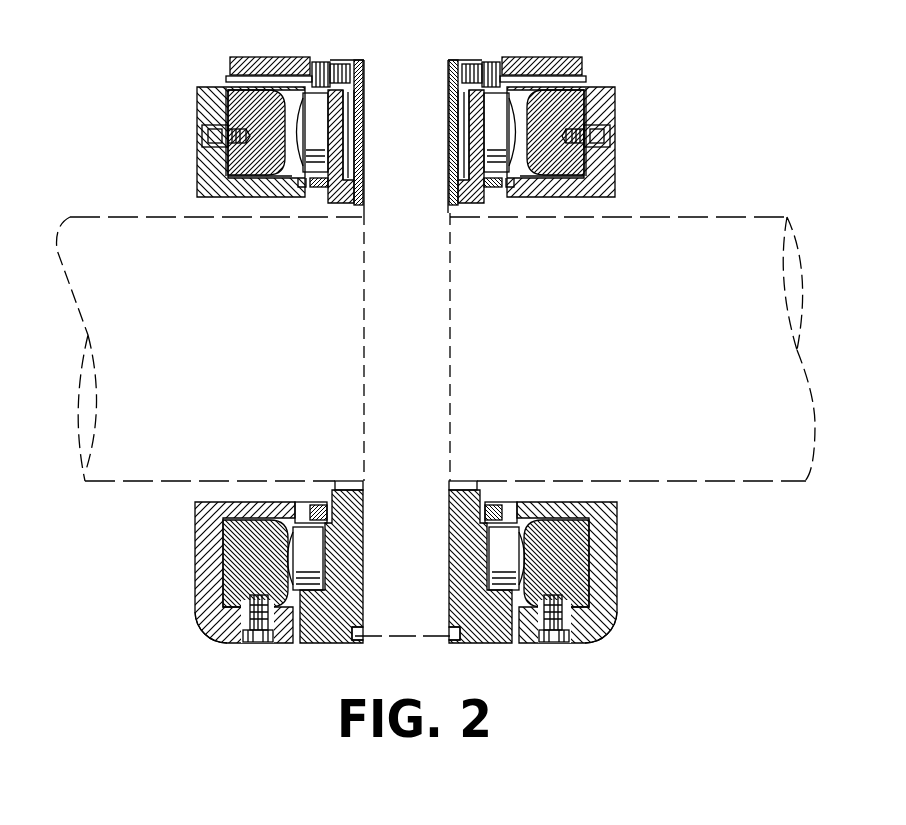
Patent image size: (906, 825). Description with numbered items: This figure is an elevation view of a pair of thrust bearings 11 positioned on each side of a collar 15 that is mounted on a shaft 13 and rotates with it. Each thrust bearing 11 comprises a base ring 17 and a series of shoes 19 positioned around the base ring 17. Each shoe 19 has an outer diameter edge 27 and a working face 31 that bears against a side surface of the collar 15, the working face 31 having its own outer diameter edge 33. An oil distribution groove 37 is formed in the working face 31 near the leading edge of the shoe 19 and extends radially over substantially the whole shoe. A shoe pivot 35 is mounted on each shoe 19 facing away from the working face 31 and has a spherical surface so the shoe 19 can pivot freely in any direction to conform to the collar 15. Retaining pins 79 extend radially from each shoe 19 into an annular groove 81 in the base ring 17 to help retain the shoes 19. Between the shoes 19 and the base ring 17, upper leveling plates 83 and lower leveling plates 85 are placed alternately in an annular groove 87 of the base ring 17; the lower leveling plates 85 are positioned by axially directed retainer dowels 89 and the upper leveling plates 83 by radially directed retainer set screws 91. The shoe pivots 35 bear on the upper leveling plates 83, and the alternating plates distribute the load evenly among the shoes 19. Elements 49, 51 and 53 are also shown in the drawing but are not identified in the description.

The thrust bearing 11 is at (194, 49).
The shaft 13 is at (142, 216).
The collar 15 is at (410, 637).
The base ring 17 is at (196, 104).
The shoe 19 is at (344, 185).
The outer diameter edge 27 is at (247, 58).
The working face 31 is at (361, 173).
The outer diameter edge of working face 33 is at (358, 60).
The shoe pivot 35 is at (300, 116).
The oil distribution groove 37 is at (354, 148).
The bolt 49 is at (226, 80).
The nut 51 is at (324, 66).
The lock nut 53 is at (350, 77).
The retaining pin 79 is at (326, 192).
The annular groove 81 is at (302, 190).
The upper leveling plate 83 is at (284, 122).
The lower leveling plate 85 is at (238, 163).
The annular groove 87 is at (226, 87).
The lower leveling plate retainer dowel 89 is at (220, 147).
The upper leveling plate retainer set screw 91 is at (250, 644).